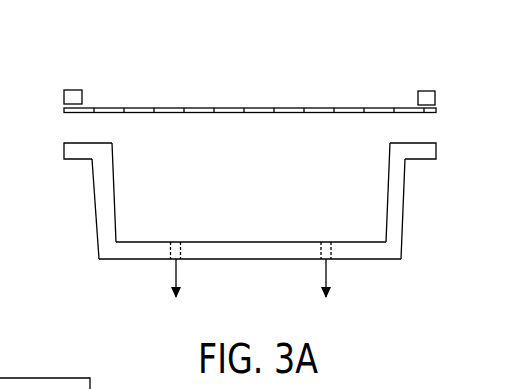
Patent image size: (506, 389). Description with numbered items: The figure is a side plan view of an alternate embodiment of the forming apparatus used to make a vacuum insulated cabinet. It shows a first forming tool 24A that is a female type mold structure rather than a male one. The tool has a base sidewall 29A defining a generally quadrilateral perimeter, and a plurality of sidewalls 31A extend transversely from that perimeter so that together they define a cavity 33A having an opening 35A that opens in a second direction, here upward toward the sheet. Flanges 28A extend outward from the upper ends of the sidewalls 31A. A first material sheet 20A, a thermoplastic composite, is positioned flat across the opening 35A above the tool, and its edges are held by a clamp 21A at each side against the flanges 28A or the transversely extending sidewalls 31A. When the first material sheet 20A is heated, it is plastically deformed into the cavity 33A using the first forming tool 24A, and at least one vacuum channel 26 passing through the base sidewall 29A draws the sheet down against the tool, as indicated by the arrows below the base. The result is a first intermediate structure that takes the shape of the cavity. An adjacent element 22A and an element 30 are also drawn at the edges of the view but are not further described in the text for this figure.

The first material sheet 20A is at (255, 108).
The clamp 21A is at (78, 98).
The adjacent container 22A is at (48, 378).
The first forming tool 24A is at (225, 242).
The vacuum channel 26 is at (322, 251).
The flanges 28A is at (78, 148).
The base sidewall 29A is at (133, 252).
The support 30 is at (497, 194).
The sidewalls 31A is at (116, 200).
The cavity 33A is at (211, 156).
The opening 35A is at (352, 139).